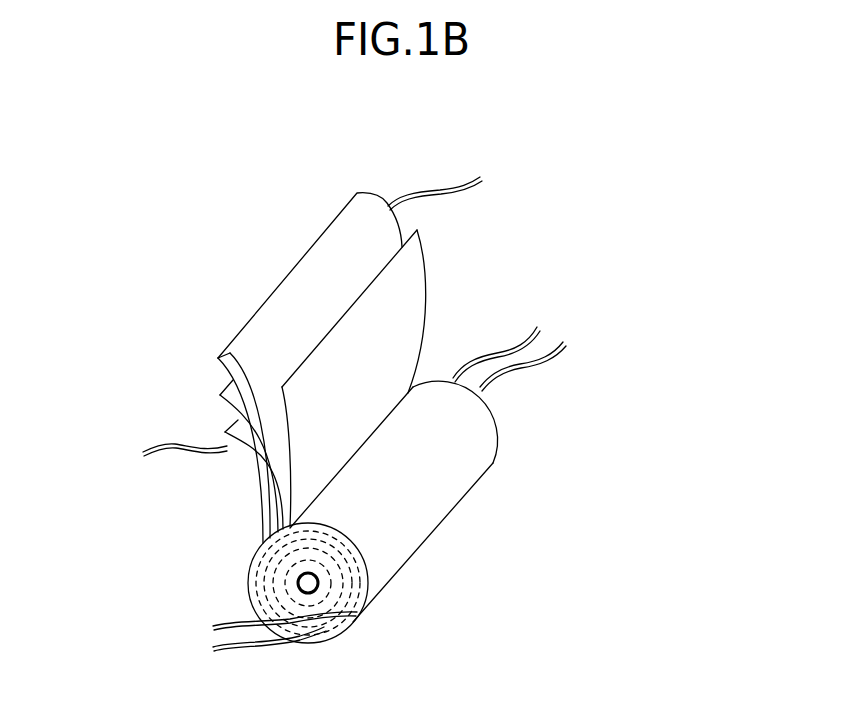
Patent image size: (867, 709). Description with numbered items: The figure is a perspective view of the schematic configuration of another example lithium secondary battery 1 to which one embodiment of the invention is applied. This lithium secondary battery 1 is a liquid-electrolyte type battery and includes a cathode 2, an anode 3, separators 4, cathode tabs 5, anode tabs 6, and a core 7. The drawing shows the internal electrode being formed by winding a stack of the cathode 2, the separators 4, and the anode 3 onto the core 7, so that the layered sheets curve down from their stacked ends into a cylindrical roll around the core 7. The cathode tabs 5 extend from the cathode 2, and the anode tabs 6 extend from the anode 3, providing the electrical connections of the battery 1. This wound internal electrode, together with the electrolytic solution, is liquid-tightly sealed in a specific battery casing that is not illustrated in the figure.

The lithium secondary battery 1 is at (457, 523).
The cathode 2 is at (258, 477).
The anode 3 is at (297, 290).
The separators 4 is at (227, 390).
The cathode tabs 5 is at (157, 440).
The anode tabs 6 is at (438, 196).
The core 7 is at (318, 592).